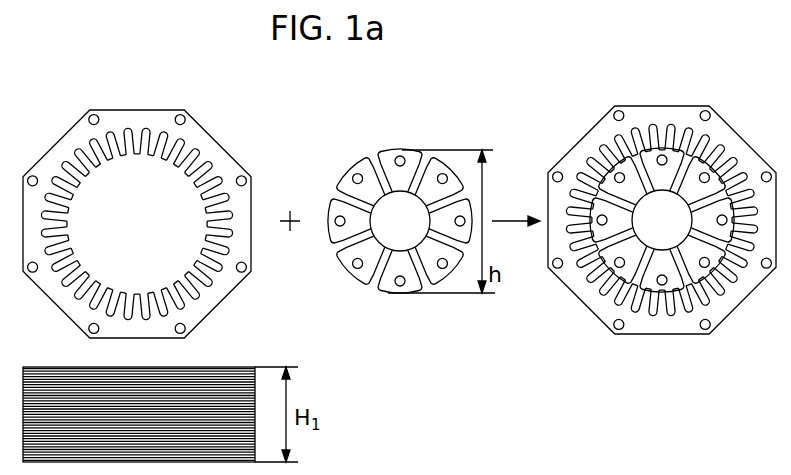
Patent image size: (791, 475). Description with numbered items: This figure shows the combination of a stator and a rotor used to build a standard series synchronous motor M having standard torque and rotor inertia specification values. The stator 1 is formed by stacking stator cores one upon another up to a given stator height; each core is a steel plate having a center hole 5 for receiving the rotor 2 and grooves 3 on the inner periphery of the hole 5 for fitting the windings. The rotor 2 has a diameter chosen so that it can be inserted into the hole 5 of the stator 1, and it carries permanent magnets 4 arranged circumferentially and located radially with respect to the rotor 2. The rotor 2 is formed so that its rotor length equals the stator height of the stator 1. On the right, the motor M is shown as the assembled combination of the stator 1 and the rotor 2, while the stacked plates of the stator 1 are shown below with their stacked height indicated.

The stator 1 is at (217, 137).
The rotor 2 is at (393, 187).
The grooves 3 is at (147, 132).
The permanent magnets 4 is at (352, 169).
The center hole 5 is at (100, 189).
The standard series synchronous motor M is at (675, 91).